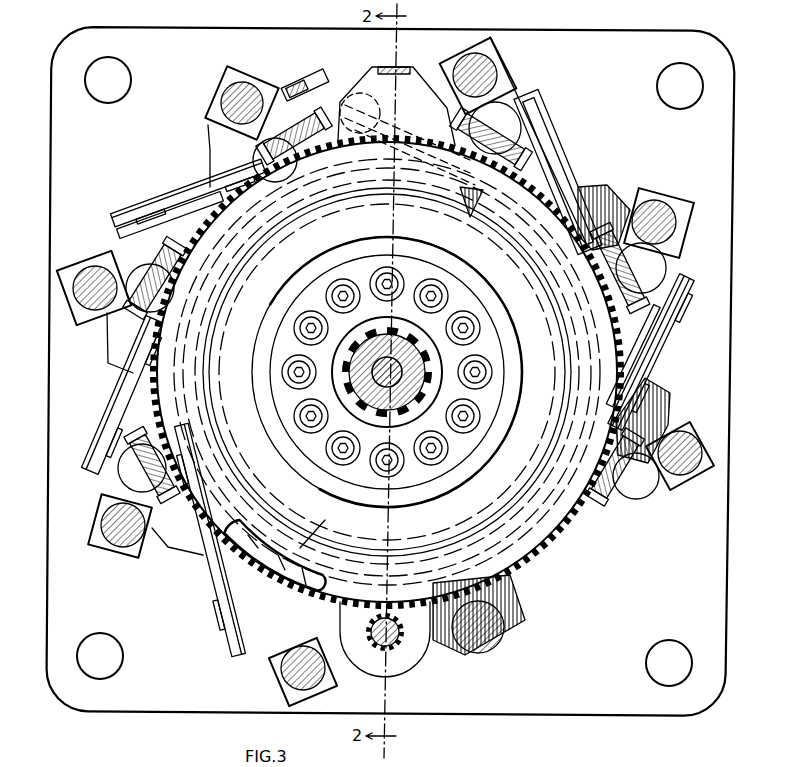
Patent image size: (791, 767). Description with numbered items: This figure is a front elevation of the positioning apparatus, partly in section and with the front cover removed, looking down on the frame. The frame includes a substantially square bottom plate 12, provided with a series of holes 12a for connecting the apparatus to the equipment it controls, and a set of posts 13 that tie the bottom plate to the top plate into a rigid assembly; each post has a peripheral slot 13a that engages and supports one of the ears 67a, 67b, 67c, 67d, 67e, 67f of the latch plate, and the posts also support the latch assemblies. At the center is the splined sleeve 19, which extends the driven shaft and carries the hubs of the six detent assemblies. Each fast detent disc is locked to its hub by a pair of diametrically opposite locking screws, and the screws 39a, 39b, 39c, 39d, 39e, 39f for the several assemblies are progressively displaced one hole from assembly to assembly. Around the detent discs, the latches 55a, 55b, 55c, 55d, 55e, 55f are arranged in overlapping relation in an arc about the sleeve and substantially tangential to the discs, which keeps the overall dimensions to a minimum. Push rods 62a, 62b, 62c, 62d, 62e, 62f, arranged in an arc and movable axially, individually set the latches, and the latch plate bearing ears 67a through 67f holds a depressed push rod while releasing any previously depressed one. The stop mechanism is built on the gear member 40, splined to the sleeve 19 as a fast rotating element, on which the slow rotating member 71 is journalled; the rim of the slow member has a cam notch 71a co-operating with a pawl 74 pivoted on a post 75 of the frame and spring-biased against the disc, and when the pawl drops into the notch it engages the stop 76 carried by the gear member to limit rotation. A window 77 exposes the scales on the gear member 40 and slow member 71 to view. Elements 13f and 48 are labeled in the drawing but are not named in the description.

The bottom plate 12 is at (304, 32).
The holes 12a is at (113, 63).
The posts 13 is at (222, 100).
The peripheral slot 13a is at (223, 73).
The pinion drive housing 13f is at (666, 488).
The splined sleeve 19 is at (404, 357).
The locking screws 39a is at (443, 284).
The locking screws 39b is at (480, 324).
The locking screws 39c is at (284, 370).
The locking screws 39d is at (303, 314).
The locking screws 39e is at (346, 280).
The locking screws 39f is at (390, 268).
The gear member 40 is at (279, 578).
The brake lining 48 is at (294, 544).
The latch 55a is at (215, 609).
The latch 55b is at (108, 390).
The latch 55c is at (192, 179).
The latch 55d is at (358, 65).
The latch 55e is at (595, 135).
The latch 55f is at (693, 365).
The push rod 62a is at (166, 497).
The push rod 62b is at (145, 296).
The push rod 62c is at (270, 148).
The push rod 62d is at (518, 112).
The push rod 62e is at (653, 283).
The push rod 62f is at (620, 492).
The ear 67a is at (177, 555).
The ear 67b is at (107, 347).
The ear 67c is at (210, 152).
The ear 67d is at (440, 88).
The ear 67e is at (594, 187).
The ear 67f is at (670, 398).
The slow rotating member 71 is at (310, 576).
The cam notch 71a is at (503, 244).
The pawl 74 is at (500, 210).
The post 75 is at (376, 106).
The stop 76 is at (490, 200).
The window 77 is at (318, 546).